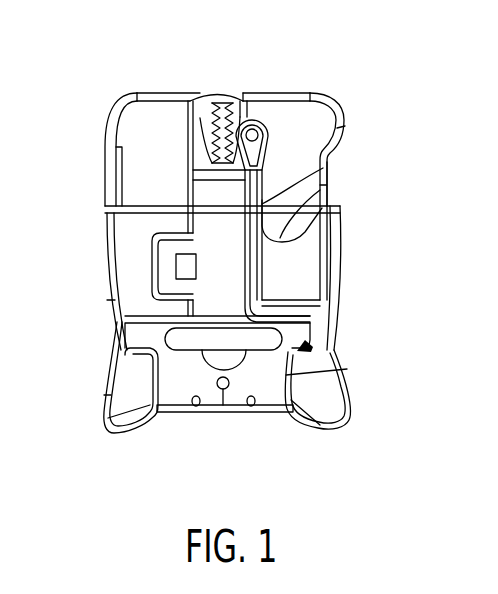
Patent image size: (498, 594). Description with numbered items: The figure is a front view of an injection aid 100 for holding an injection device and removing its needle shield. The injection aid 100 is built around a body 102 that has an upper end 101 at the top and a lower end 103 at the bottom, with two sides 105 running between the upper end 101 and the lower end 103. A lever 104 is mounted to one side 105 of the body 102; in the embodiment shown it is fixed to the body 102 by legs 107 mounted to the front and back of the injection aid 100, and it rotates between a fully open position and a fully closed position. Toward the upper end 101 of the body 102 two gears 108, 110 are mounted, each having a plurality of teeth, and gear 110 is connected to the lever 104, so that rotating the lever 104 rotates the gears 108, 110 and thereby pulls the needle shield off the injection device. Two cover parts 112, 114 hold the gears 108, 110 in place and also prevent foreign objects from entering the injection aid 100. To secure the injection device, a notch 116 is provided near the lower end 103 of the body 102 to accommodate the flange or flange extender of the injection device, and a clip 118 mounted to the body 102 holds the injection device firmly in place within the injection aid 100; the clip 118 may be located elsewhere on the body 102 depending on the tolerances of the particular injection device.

The injection aid 100 is at (116, 83).
The upper end 101 is at (279, 102).
The body 102 is at (127, 238).
The lower end 103 is at (221, 440).
The lever 104 is at (327, 396).
The sides 105 is at (93, 346).
The legs 107 is at (326, 176).
The gear 108 is at (207, 140).
The gear 110 is at (233, 112).
The cover part 112 is at (133, 146).
The cover part 114 is at (318, 118).
The notch 116 is at (306, 346).
The clip 118 is at (182, 269).